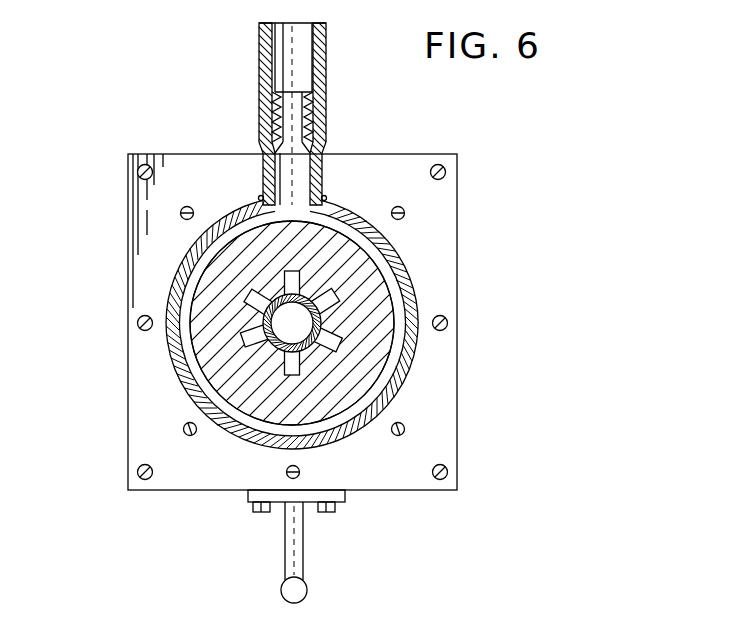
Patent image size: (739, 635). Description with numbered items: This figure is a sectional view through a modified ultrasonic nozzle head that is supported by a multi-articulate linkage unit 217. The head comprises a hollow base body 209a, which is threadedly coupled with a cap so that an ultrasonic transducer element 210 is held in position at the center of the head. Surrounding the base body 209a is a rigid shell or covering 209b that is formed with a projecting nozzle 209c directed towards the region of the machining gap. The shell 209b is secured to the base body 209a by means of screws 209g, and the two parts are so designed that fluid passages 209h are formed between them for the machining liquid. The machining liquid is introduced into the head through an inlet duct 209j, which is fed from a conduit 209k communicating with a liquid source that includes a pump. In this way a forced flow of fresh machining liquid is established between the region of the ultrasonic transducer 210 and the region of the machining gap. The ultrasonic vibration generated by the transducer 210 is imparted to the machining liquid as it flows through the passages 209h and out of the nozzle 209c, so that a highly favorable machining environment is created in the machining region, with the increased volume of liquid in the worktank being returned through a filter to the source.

The hollow base body 209a is at (387, 307).
The rigid shell 209b is at (145, 345).
The projecting nozzle 209c is at (313, 343).
The screws 209g is at (438, 163).
The fluid passages 209h is at (287, 271).
The inlet duct 209j is at (328, 114).
The conduit 209k is at (277, 45).
The ultrasonic transducer element 210 is at (303, 311).
The multi-articulate linkage unit 217 is at (312, 545).